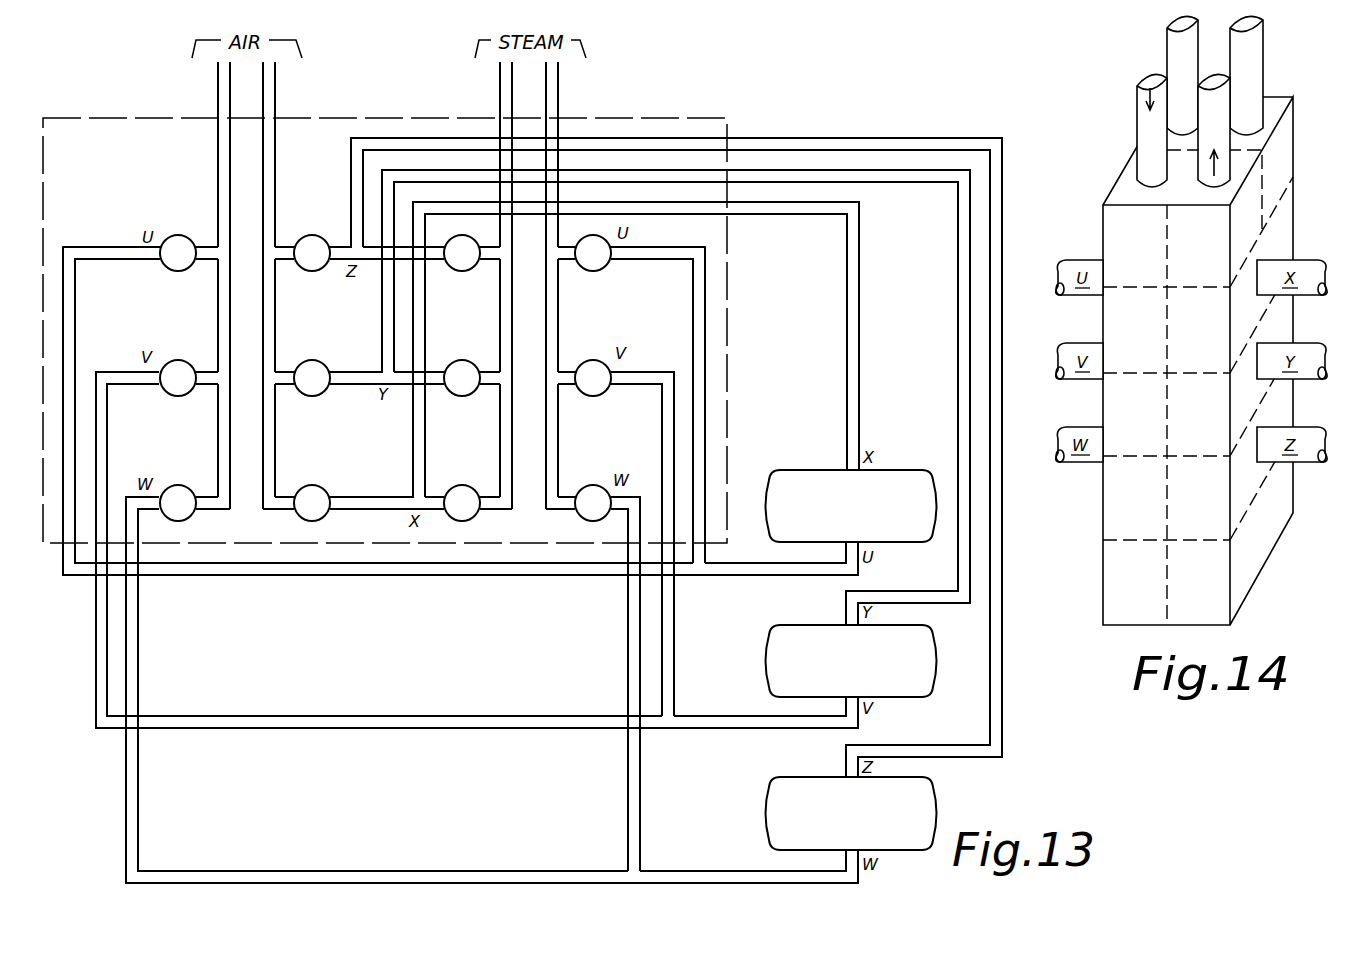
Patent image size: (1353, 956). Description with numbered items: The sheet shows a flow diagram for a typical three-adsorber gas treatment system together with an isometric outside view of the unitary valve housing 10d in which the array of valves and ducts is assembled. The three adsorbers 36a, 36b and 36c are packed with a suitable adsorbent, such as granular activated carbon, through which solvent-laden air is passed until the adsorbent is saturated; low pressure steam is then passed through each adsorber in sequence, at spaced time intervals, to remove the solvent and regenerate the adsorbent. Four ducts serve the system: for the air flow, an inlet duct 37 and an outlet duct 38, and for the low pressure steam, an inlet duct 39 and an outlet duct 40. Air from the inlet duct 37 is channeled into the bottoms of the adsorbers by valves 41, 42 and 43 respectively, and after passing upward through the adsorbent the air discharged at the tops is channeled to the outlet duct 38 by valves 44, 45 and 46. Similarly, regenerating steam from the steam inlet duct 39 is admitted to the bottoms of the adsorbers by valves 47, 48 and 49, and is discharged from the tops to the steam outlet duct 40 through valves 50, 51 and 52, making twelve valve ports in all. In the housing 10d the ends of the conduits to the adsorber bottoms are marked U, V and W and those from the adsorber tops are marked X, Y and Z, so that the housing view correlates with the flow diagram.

In FIG. 13, the air inlet duct 37 is at (218, 108).
In FIG. 14, the air inlet duct 37 is at (1190, 84).
In FIG. 13, the air outlet duct 38 is at (275, 108).
In FIG. 14, the air outlet duct 38 is at (1255, 84).
In FIG. 13, the steam inlet duct 39 is at (568, 73).
In FIG. 14, the steam inlet duct 39 is at (1159, 139).
In FIG. 13, the steam outlet duct 40 is at (500, 108).
In FIG. 14, the steam outlet duct 40 is at (1223, 139).
In FIG. 13, the valve 41 is at (169, 262).
In FIG. 13, the valve 42 is at (169, 387).
In FIG. 13, the valve 43 is at (169, 512).
In FIG. 13, the valve 44 is at (303, 262).
In FIG. 13, the valve 45 is at (303, 387).
In FIG. 13, the valve 46 is at (303, 512).
In FIG. 13, the valve 47 is at (584, 262).
In FIG. 13, the valve 48 is at (584, 387).
In FIG. 13, the valve 49 is at (584, 512).
In FIG. 13, the valve 50 is at (453, 262).
In FIG. 13, the valve 51 is at (453, 387).
In FIG. 13, the valve 52 is at (453, 512).
In FIG. 13, the adsorber 36a is at (830, 504).
In FIG. 13, the adsorber 36b is at (830, 659).
In FIG. 13, the adsorber 36c is at (830, 811).
In FIG. 14, the valve housing 10d is at (1293, 232).